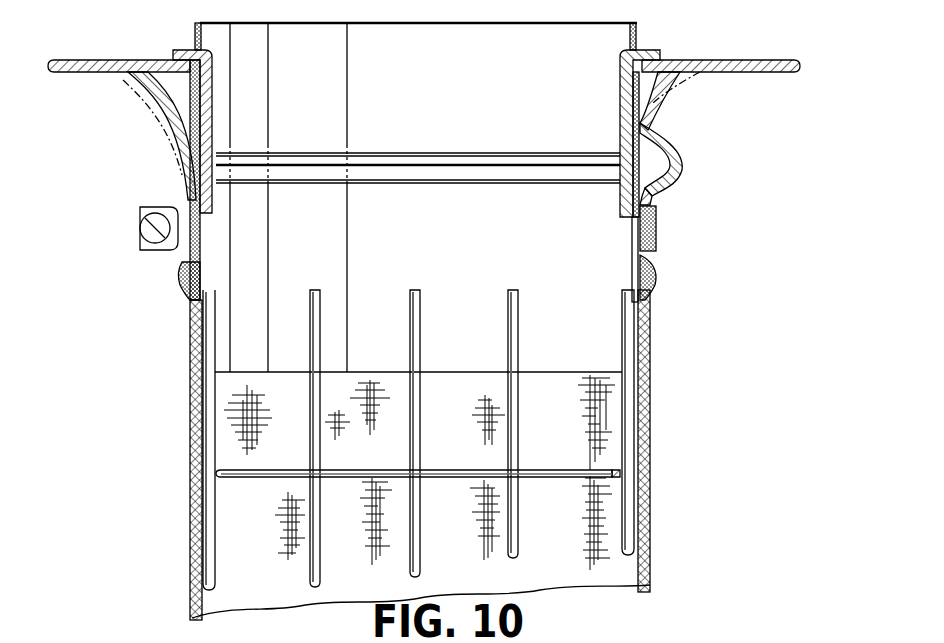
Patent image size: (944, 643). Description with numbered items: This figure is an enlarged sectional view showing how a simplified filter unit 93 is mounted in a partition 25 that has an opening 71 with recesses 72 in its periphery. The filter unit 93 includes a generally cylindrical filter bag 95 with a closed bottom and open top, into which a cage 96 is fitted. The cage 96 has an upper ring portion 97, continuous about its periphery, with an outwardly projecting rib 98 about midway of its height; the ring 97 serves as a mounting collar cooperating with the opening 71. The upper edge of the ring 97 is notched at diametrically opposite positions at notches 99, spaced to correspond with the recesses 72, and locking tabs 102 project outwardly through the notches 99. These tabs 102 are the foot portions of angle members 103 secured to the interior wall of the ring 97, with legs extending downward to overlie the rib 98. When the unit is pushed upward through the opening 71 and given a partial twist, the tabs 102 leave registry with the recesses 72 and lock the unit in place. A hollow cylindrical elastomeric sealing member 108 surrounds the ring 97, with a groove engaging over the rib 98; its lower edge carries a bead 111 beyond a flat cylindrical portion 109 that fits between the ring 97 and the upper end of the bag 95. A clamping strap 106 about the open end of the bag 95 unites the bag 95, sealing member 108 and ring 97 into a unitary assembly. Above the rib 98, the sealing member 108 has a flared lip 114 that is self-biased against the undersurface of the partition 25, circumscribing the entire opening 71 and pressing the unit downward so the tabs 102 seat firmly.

The partition 25 is at (730, 60).
The opening 71 is at (160, 136).
The recess 72 is at (180, 55).
The filter unit 93 is at (652, 441).
The filter bag 95 is at (650, 487).
The cage 96 is at (226, 478).
The upper ring portion 97 is at (633, 247).
The outwardly projecting rib 98 is at (662, 192).
The notch 99 is at (197, 40).
The locking tab 102 is at (660, 50).
The angle member 103 is at (213, 114).
The clamping strap 106 is at (147, 229).
The sealing member 108 is at (673, 152).
The flat cylindrical portion 109 is at (657, 250).
The bead 111 is at (182, 290).
The flared lip 114 is at (660, 115).